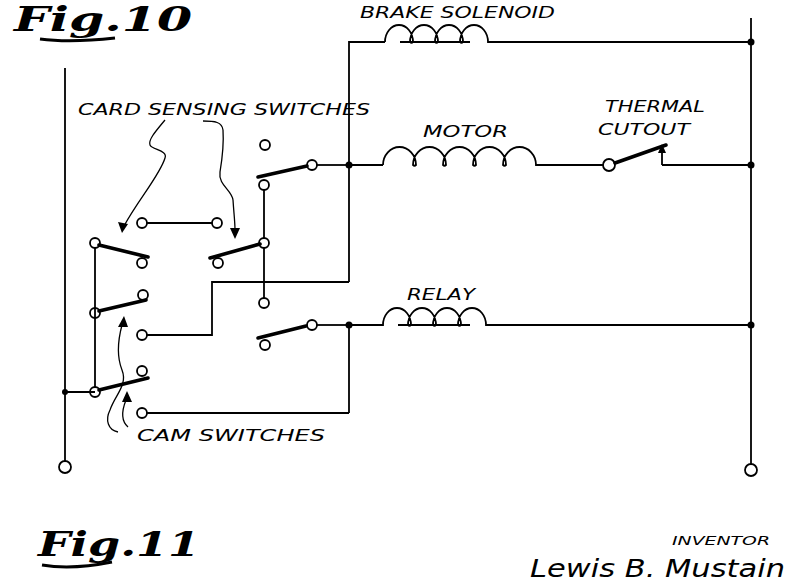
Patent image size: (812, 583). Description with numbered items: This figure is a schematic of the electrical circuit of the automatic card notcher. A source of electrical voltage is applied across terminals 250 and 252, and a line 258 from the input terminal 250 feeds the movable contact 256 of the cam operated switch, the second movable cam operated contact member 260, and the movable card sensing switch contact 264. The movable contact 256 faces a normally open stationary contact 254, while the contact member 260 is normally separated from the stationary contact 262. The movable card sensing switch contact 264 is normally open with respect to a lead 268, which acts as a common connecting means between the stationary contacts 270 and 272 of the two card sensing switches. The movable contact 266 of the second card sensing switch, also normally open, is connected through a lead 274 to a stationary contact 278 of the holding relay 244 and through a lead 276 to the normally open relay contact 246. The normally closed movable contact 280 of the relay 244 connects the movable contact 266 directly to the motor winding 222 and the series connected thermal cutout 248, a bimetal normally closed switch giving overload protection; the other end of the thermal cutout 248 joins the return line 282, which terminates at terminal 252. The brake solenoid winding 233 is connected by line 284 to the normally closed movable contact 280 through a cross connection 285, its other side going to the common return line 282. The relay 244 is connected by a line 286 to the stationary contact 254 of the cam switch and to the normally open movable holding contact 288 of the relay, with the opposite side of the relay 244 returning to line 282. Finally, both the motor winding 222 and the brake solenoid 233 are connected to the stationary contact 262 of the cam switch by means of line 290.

The motor winding 222 is at (497, 170).
The brake solenoid winding 233 is at (469, 50).
The holding relay 244 is at (488, 318).
The normally open relay contact 246 is at (270, 303).
The thermal cutout 248 is at (643, 166).
The input terminal 250 is at (72, 468).
The terminal 252 is at (745, 473).
The normally open stationary contact 254 is at (147, 411).
The movable contact 256 is at (150, 378).
The line 258 is at (65, 406).
The movable cam operated contact member 260 is at (148, 299).
The stationary contact 262 is at (148, 338).
The movable card sensing switch contact 264 is at (112, 238).
The movable contact 266 is at (217, 253).
The lead 268 is at (190, 220).
The stationary contact 270 is at (157, 210).
The stationary contact 272 is at (204, 187).
The lead 274 is at (266, 214).
The lead 276 is at (266, 268).
The stationary contact 278 is at (270, 184).
The normally closed movable contact 280 is at (283, 163).
The return line 282 is at (751, 205).
The line 284 is at (349, 67).
The cross connection 285 is at (350, 170).
The line 286 is at (349, 385).
The movable holding contact 288 is at (288, 335).
The line 290 is at (349, 255).